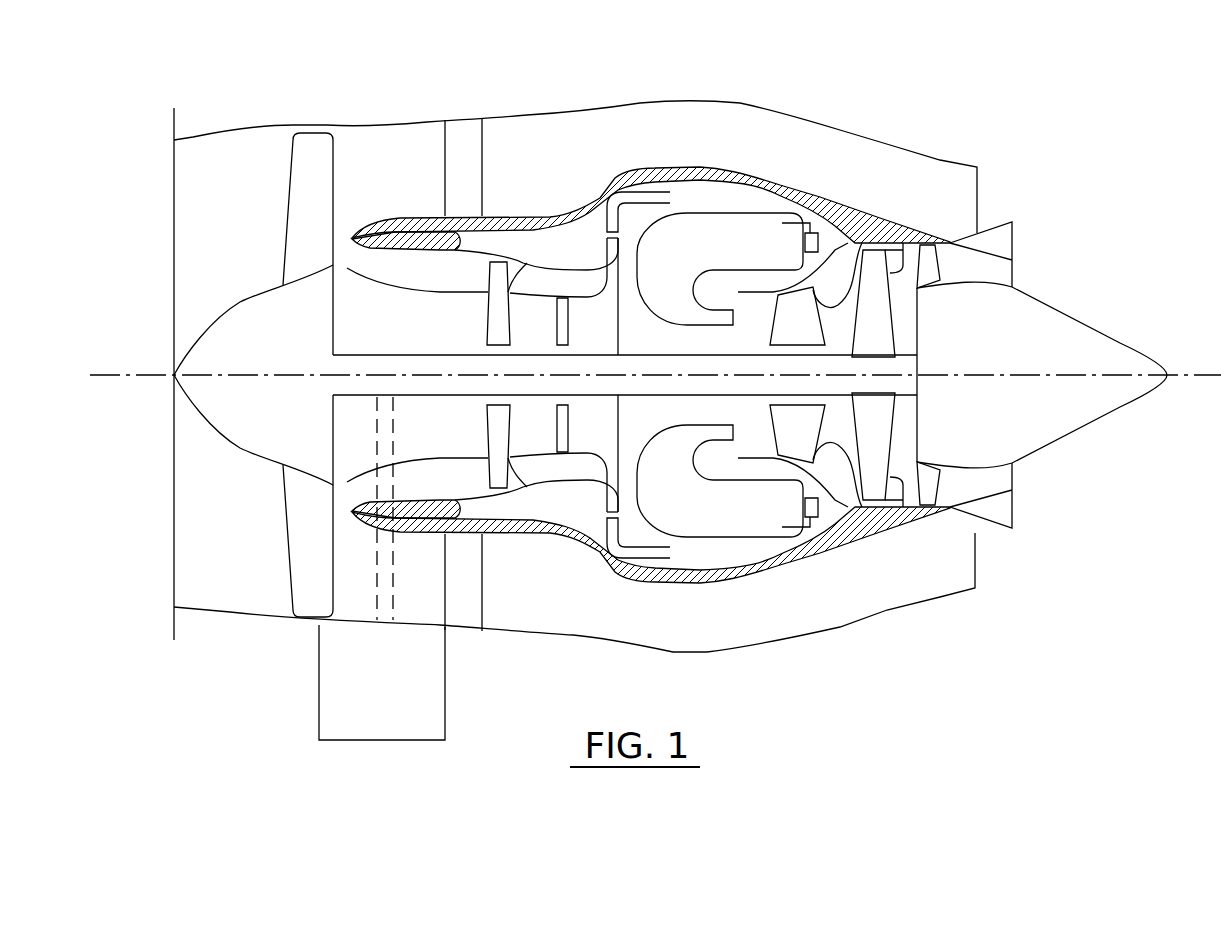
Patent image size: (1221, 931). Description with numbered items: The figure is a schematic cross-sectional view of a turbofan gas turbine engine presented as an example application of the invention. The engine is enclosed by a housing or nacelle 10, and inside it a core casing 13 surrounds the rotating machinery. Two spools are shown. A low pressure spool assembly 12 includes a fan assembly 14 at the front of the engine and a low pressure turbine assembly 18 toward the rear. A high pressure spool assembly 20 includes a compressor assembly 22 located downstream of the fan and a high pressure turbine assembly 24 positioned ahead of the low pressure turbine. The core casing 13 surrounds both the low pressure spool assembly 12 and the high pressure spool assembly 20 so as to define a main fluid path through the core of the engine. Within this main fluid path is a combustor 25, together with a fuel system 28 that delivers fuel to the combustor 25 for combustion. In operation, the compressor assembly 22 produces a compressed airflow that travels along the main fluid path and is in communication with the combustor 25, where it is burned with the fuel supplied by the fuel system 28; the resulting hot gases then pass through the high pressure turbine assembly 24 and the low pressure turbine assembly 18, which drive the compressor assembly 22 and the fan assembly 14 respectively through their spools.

The nacelle 10 is at (622, 108).
The low pressure spool assembly 12 is at (418, 347).
The core casing 13 is at (642, 170).
The fan assembly 14 is at (288, 187).
The low pressure turbine assembly 18 is at (896, 222).
The high pressure spool assembly 20 is at (548, 343).
The compressor assembly 22 is at (527, 265).
The high pressure turbine assembly 24 is at (828, 227).
The combustor 25 is at (722, 212).
The fuel system 28 is at (795, 223).